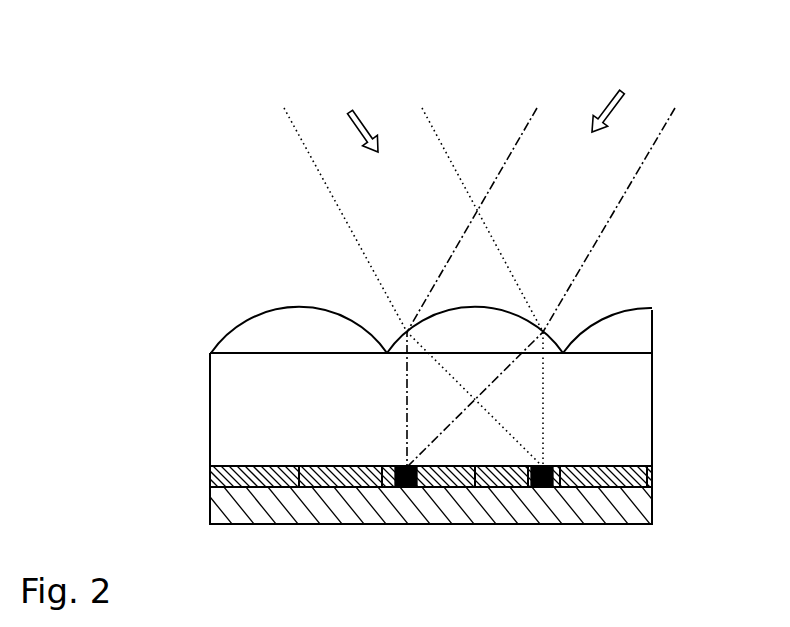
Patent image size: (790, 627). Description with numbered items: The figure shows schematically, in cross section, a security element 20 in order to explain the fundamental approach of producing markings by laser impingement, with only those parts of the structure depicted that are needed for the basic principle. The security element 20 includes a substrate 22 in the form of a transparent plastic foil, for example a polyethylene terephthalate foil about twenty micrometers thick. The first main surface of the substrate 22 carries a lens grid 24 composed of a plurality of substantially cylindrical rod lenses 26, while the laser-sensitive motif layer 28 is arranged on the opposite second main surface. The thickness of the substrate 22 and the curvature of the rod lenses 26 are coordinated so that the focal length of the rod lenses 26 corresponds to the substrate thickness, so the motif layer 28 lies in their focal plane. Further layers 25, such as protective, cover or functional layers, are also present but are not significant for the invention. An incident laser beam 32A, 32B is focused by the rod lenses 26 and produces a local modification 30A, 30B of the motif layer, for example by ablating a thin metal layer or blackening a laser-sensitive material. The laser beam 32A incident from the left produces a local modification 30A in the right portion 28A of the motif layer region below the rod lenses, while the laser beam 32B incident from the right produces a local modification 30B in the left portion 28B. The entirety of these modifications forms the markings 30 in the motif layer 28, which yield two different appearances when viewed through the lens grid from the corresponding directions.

The security element 20 is at (152, 315).
The substrate 22 is at (224, 403).
The lens grid 24 is at (661, 310).
The further layers 25 is at (637, 508).
The rod lenses 26 is at (283, 322).
The laser-sensitive motif layer 28 is at (652, 481).
The right portion of the motif layer region 28A is at (340, 480).
The left portion of the motif layer region 28B is at (262, 480).
The markings 30 is at (377, 578).
The local modification 30A is at (543, 487).
The local modification 30B is at (404, 487).
The laser beam 32A is at (367, 117).
The laser beam 32B is at (610, 95).